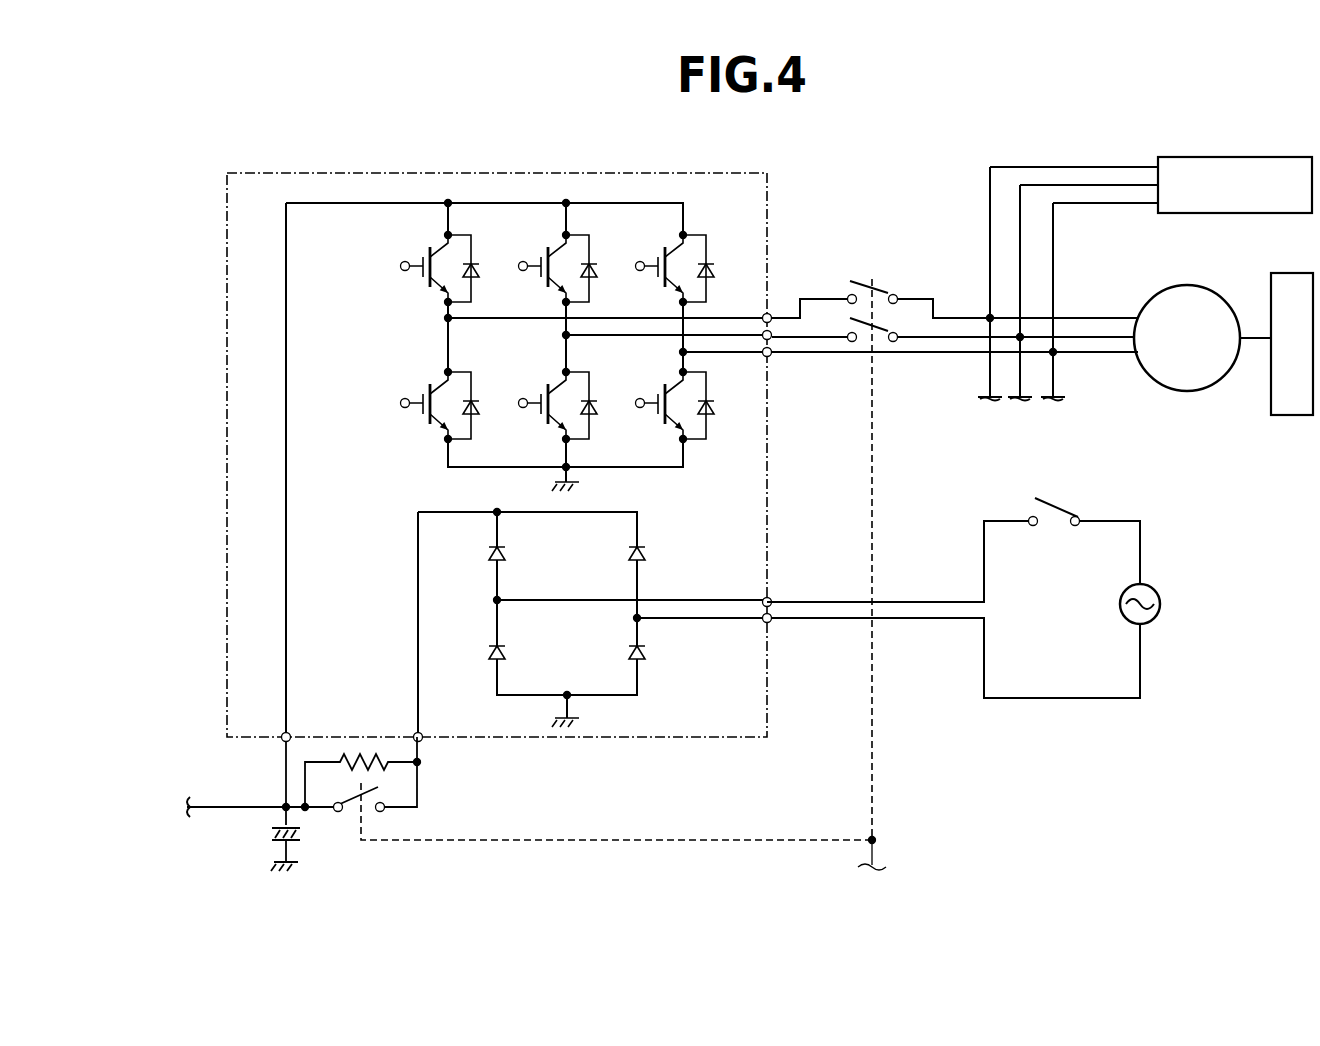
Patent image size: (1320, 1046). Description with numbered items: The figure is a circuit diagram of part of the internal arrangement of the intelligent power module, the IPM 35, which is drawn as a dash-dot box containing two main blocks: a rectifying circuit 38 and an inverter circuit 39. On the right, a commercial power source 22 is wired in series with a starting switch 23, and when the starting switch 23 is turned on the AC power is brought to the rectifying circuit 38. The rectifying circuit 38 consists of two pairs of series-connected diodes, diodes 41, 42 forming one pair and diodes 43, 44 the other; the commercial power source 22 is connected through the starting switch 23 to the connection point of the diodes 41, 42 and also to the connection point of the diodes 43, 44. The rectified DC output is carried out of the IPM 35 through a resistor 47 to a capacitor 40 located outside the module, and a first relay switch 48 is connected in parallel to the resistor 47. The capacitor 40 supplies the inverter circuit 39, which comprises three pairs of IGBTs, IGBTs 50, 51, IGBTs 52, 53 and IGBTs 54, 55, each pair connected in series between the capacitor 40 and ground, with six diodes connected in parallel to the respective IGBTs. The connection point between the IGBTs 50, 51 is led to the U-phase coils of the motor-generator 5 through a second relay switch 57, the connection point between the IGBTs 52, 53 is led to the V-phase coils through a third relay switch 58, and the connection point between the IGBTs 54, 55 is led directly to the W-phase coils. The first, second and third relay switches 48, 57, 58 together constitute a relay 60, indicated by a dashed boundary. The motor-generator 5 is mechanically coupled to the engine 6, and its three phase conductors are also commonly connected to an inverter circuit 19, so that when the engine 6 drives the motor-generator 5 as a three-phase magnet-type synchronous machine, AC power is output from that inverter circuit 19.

The motor-generator 5 is at (1198, 287).
The engine 6 is at (1292, 282).
The inverter circuit 19 is at (1257, 157).
The commercial power source 22 is at (1153, 589).
The starting switch 23 is at (1053, 505).
The IPM 35 is at (770, 712).
The rectifying circuit 38 is at (662, 521).
The inverter circuit 39 is at (692, 205).
The capacitor 40 is at (276, 838).
The diode 41 is at (488, 555).
The diode 42 is at (488, 653).
The diode 43 is at (647, 557).
The diode 44 is at (647, 656).
The resistor 47 is at (357, 756).
The first relay switch 48 is at (385, 790).
The IGBT 50 is at (427, 280).
The IGBT 51 is at (428, 418).
The IGBT 52 is at (537, 254).
The IGBT 53 is at (545, 418).
The IGBT 54 is at (655, 254).
The IGBT 55 is at (660, 418).
The second relay switch 57 is at (878, 290).
The third relay switch 58 is at (882, 330).
The relay 60 is at (872, 760).